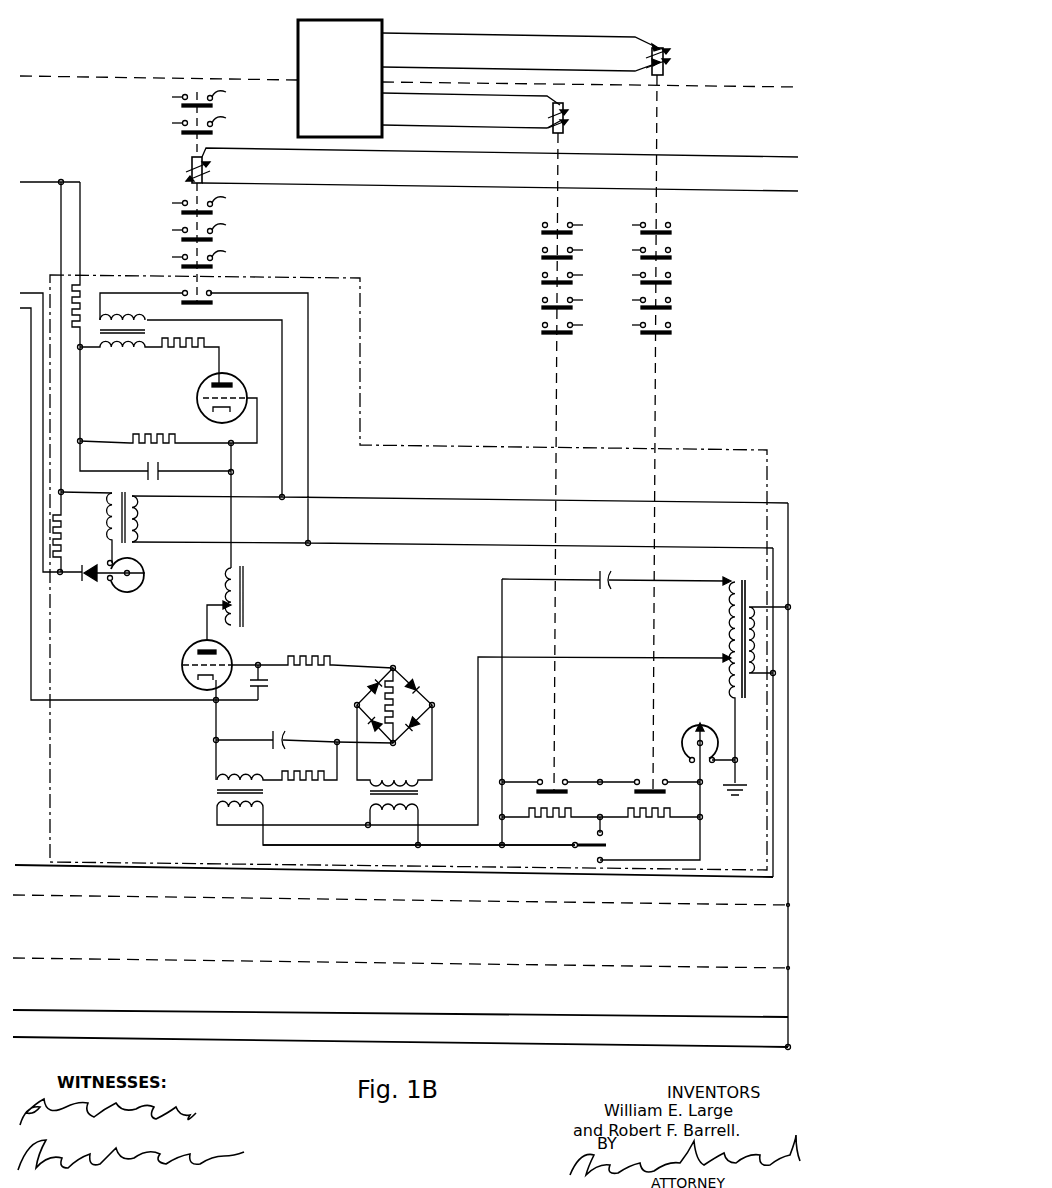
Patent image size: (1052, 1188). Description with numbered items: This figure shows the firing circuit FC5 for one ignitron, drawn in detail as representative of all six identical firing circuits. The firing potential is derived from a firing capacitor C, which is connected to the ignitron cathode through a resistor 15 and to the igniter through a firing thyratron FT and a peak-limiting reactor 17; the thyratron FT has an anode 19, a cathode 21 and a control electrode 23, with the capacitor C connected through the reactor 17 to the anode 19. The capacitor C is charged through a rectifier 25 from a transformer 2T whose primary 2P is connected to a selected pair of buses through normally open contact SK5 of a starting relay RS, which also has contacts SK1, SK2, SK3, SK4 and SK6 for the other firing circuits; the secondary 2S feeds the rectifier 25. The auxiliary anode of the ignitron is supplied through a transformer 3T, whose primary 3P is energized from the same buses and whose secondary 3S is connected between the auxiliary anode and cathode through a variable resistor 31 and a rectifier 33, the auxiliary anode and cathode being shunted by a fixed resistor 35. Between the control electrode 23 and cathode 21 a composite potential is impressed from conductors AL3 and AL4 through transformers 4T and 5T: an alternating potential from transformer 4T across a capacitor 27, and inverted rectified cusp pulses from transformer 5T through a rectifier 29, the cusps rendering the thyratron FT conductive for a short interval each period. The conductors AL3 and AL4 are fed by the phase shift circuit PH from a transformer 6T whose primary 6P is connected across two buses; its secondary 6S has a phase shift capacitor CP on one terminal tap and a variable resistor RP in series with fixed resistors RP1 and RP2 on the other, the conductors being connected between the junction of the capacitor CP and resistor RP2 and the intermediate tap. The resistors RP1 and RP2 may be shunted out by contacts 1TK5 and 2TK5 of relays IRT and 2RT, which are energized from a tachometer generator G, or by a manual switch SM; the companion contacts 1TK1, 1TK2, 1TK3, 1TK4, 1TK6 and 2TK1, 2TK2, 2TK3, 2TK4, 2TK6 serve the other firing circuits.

The tachometer generator G is at (298, 23).
The relay IRT is at (666, 48).
The relay 2RT is at (552, 110).
The starting relay RS is at (167, 172).
The normally open contact SK1 is at (216, 126).
The normally open contact SK2 is at (216, 100).
The normally open contact SK3 is at (218, 233).
The normally open contact SK4 is at (218, 206).
The normally open contact SK5 is at (214, 303).
The normally open contact SK6 is at (218, 260).
The relay contact 2TK1 is at (542, 250).
The relay contact 2TK2 is at (543, 224).
The relay contact 2TK3 is at (542, 300).
The relay contact 2TK4 is at (543, 275).
The relay contact 2TK5 is at (548, 780).
The relay contact 2TK6 is at (542, 324).
The relay contact 1TK1 is at (671, 251).
The relay contact 1TK2 is at (671, 226).
The relay contact 1TK3 is at (671, 301).
The relay contact 1TK4 is at (671, 276).
The relay contact 1TK5 is at (647, 774).
The relay contact 1TK6 is at (671, 326).
The resistor 15 is at (88, 284).
The primary of transformer 2T 2P is at (140, 318).
The transformer 2T is at (147, 332).
The secondary of transformer 2T 2S is at (136, 351).
The rectifier 25 is at (243, 366).
The firing capacitor C is at (162, 468).
The transformer 3T is at (122, 509).
The secondary of transformer 3T 3S is at (110, 517).
The primary of transformer 3T 3P is at (138, 523).
The fixed resistor 35 is at (68, 521).
The rectifier 33 is at (88, 565).
The variable resistor 31 is at (141, 561).
The peak-limiting reactor 17 is at (245, 592).
The firing thyratron FT is at (208, 656).
The anode 19 is at (200, 642).
The control electrode 23 is at (192, 661).
The cathode 21 is at (200, 678).
The capacitor 27 is at (278, 739).
The rectifier 29 is at (409, 705).
The transformer 4T is at (216, 792).
The transformer 5T is at (422, 793).
The conductor AL3 is at (472, 826).
The conductor AL4 is at (477, 849).
The firing circuit FC5 is at (137, 767).
The phase shift circuit PH is at (608, 640).
The phase shift capacitor CP is at (602, 571).
The transformer 6T is at (740, 578).
The secondary of transformer 6T 6S is at (728, 618).
The primary of transformer 6T 6P is at (758, 677).
The variable resistor RP is at (698, 726).
The fixed resistor RP1 is at (648, 825).
The fixed resistor RP2 is at (562, 821).
The manual switch SM is at (604, 838).